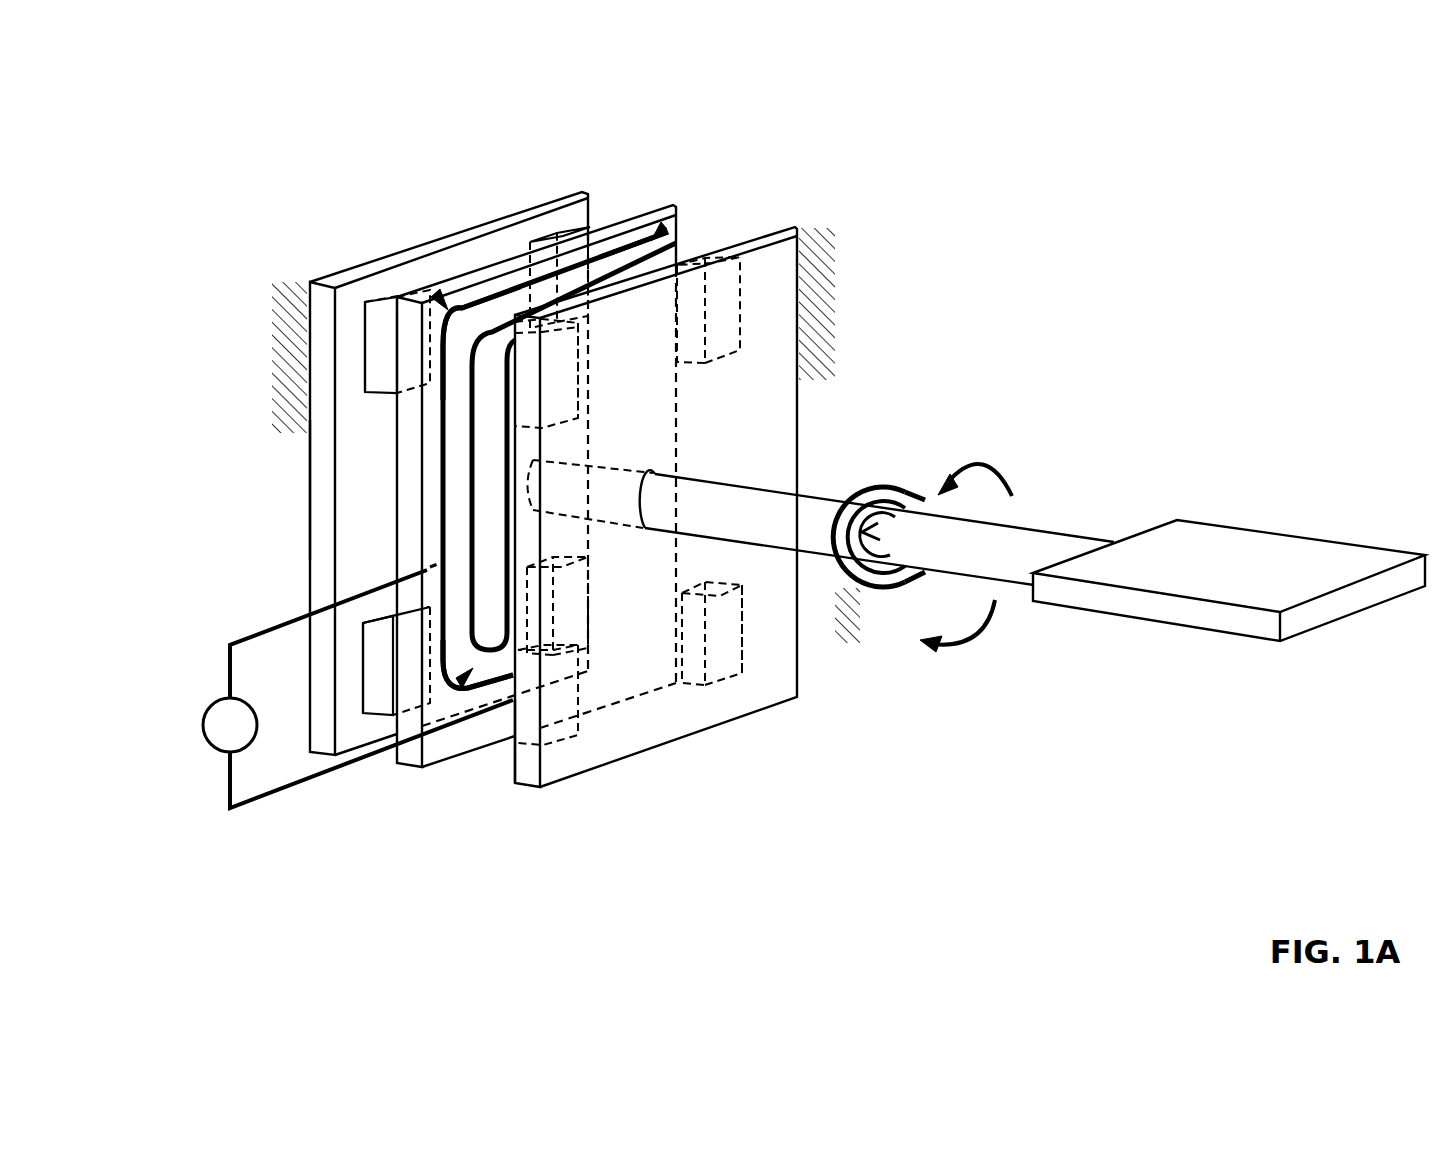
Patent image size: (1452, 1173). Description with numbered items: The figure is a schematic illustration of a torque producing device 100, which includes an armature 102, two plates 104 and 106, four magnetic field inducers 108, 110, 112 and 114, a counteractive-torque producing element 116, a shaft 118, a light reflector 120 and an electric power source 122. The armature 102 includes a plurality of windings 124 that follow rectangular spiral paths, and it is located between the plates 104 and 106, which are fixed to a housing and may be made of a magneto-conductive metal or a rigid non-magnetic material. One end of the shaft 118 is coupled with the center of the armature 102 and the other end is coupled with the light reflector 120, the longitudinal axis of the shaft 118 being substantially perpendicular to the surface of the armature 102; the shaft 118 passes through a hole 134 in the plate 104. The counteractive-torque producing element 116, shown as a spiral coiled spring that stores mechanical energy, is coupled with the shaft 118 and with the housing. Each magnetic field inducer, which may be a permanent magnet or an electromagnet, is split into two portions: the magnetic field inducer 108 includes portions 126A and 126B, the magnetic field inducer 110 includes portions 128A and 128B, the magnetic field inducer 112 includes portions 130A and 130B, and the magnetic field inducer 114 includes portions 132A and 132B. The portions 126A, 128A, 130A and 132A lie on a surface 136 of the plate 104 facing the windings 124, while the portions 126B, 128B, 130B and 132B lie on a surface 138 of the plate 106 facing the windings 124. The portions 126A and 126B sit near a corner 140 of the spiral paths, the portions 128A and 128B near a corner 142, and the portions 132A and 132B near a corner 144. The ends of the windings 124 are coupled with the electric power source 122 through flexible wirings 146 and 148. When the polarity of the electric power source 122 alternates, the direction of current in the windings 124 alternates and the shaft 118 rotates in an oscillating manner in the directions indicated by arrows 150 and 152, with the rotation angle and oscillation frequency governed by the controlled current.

The torque producing device 100 is at (1124, 190).
The armature 102 is at (660, 203).
The plate 104 is at (782, 224).
The plate 106 is at (579, 190).
The magnetic field inducer 108 is at (380, 378).
The magnetic field inducer 110 is at (547, 236).
The magnetic field inducer 112 is at (580, 613).
The magnetic field inducer 114 is at (375, 717).
The counteractive-torque producing element 116 is at (888, 480).
The shaft 118 is at (1046, 531).
The light reflector 120 is at (1293, 534).
The electric power source 122 is at (203, 724).
The windings 124 is at (442, 508).
The portion of magnetic field inducer 126A is at (568, 380).
The portion of magnetic field inducer 126B is at (388, 292).
The portion of magnetic field inducer 128A is at (720, 360).
The portion of magnetic field inducer 128B is at (547, 230).
The portion of magnetic field inducer 130A is at (727, 682).
The portion of magnetic field inducer 130B is at (577, 623).
The portion of magnetic field inducer 132A is at (558, 748).
The portion of magnetic field inducer 132B is at (383, 717).
The hole 134 is at (657, 497).
The surface 136 is at (512, 760).
The surface 138 is at (353, 482).
The corner 140 is at (440, 300).
The corner 142 is at (670, 223).
The corner 144 is at (455, 683).
The wiring 146 is at (273, 625).
The wiring 148 is at (247, 806).
The arrow 150 is at (980, 458).
The arrow 152 is at (955, 643).